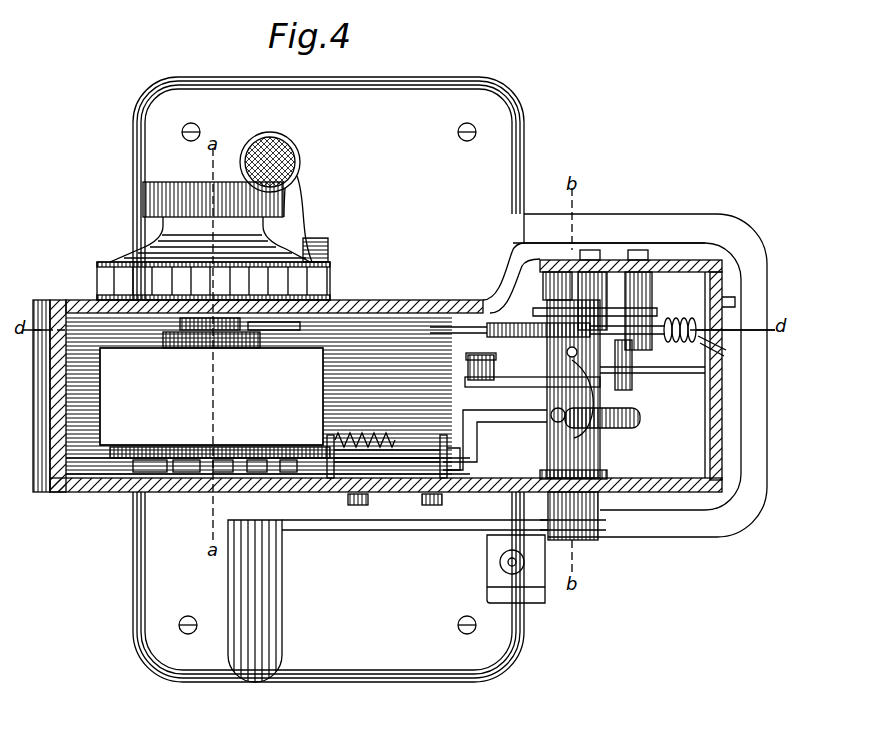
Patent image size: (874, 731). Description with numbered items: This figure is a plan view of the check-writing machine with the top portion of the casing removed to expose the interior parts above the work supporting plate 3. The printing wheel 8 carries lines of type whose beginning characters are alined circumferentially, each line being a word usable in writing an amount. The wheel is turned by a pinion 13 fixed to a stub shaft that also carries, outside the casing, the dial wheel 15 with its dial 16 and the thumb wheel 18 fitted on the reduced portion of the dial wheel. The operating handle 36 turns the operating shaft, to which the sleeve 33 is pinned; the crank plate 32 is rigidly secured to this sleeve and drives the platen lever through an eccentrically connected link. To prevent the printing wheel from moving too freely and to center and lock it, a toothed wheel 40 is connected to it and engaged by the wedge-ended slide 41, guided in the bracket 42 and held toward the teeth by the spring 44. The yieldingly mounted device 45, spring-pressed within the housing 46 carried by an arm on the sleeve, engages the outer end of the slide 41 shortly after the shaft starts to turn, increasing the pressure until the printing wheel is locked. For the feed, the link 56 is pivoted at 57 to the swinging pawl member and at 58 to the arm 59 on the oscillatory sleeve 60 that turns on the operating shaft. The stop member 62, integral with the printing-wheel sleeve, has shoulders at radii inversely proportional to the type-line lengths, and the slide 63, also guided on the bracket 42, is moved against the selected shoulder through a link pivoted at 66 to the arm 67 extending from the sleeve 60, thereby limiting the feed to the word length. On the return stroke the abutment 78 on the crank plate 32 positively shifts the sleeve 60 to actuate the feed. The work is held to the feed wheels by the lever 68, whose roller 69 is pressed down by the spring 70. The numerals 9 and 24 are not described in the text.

The work supporting plate 3 is at (450, 379).
The printing wheel 8 is at (211, 396).
The printed strip 9 is at (214, 396).
The pinion 13 is at (162, 336).
The dial wheel 15 is at (100, 270).
The dial 16 is at (148, 283).
The thumb wheel 18 is at (272, 203).
The end plate 24 is at (43, 492).
The crank plate 32 is at (547, 321).
The sleeve 33 is at (585, 354).
The operating handle 36 is at (415, 530).
The toothed wheel 40 is at (262, 447).
The slide 41 is at (398, 462).
The bracket 42 is at (422, 470).
The spring 44 is at (368, 440).
The yieldingly mounted device 45 is at (553, 425).
The housing 46 is at (605, 428).
The link 56 is at (495, 432).
The pivot 57 is at (702, 354).
The pivot 58 is at (482, 366).
The arm 59 is at (527, 387).
The oscillatory sleeve 60 is at (585, 440).
The stop member 62 is at (176, 480).
The slide 63 is at (345, 480).
The pivot 66 is at (490, 480).
The arm 67 is at (608, 482).
The lever 68 is at (295, 226).
The roller 69 is at (305, 326).
The spring 70 is at (625, 325).
The abutment 78 is at (632, 372).